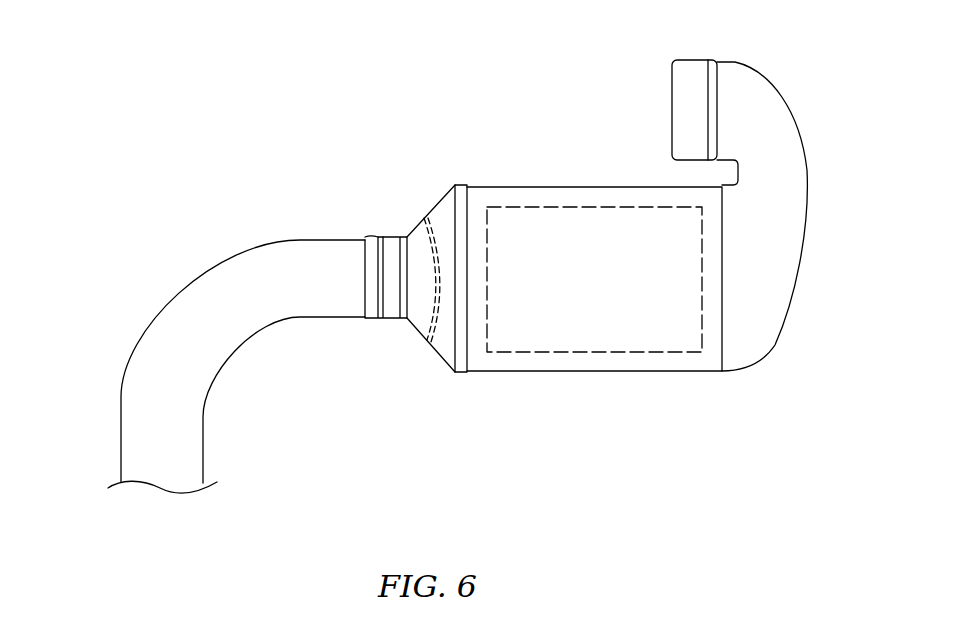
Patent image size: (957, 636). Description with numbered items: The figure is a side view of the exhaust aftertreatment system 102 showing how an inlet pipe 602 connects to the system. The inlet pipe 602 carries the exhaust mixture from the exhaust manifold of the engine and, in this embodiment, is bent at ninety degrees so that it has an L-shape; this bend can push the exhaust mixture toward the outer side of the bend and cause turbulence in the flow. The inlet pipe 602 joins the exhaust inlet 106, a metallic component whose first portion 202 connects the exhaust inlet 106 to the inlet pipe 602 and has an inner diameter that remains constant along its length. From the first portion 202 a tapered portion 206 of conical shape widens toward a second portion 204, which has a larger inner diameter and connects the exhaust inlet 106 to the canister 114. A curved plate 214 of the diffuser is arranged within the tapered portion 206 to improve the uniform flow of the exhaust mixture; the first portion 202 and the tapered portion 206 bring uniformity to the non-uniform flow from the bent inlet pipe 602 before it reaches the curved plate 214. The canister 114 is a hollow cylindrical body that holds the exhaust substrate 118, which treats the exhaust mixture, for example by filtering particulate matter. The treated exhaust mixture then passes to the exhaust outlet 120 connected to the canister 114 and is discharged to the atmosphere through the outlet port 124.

The exhaust aftertreatment system 102 is at (138, 62).
The exhaust inlet 106 is at (419, 188).
The canister 114 is at (593, 372).
The exhaust substrate 118 is at (612, 285).
The exhaust outlet 120 is at (805, 236).
The outlet port 124 is at (672, 112).
The first portion 202 is at (382, 320).
The second portion 204 is at (458, 373).
The tapered portion 206 is at (433, 347).
The curved plate 214 is at (436, 252).
The inlet pipe 602 is at (120, 417).